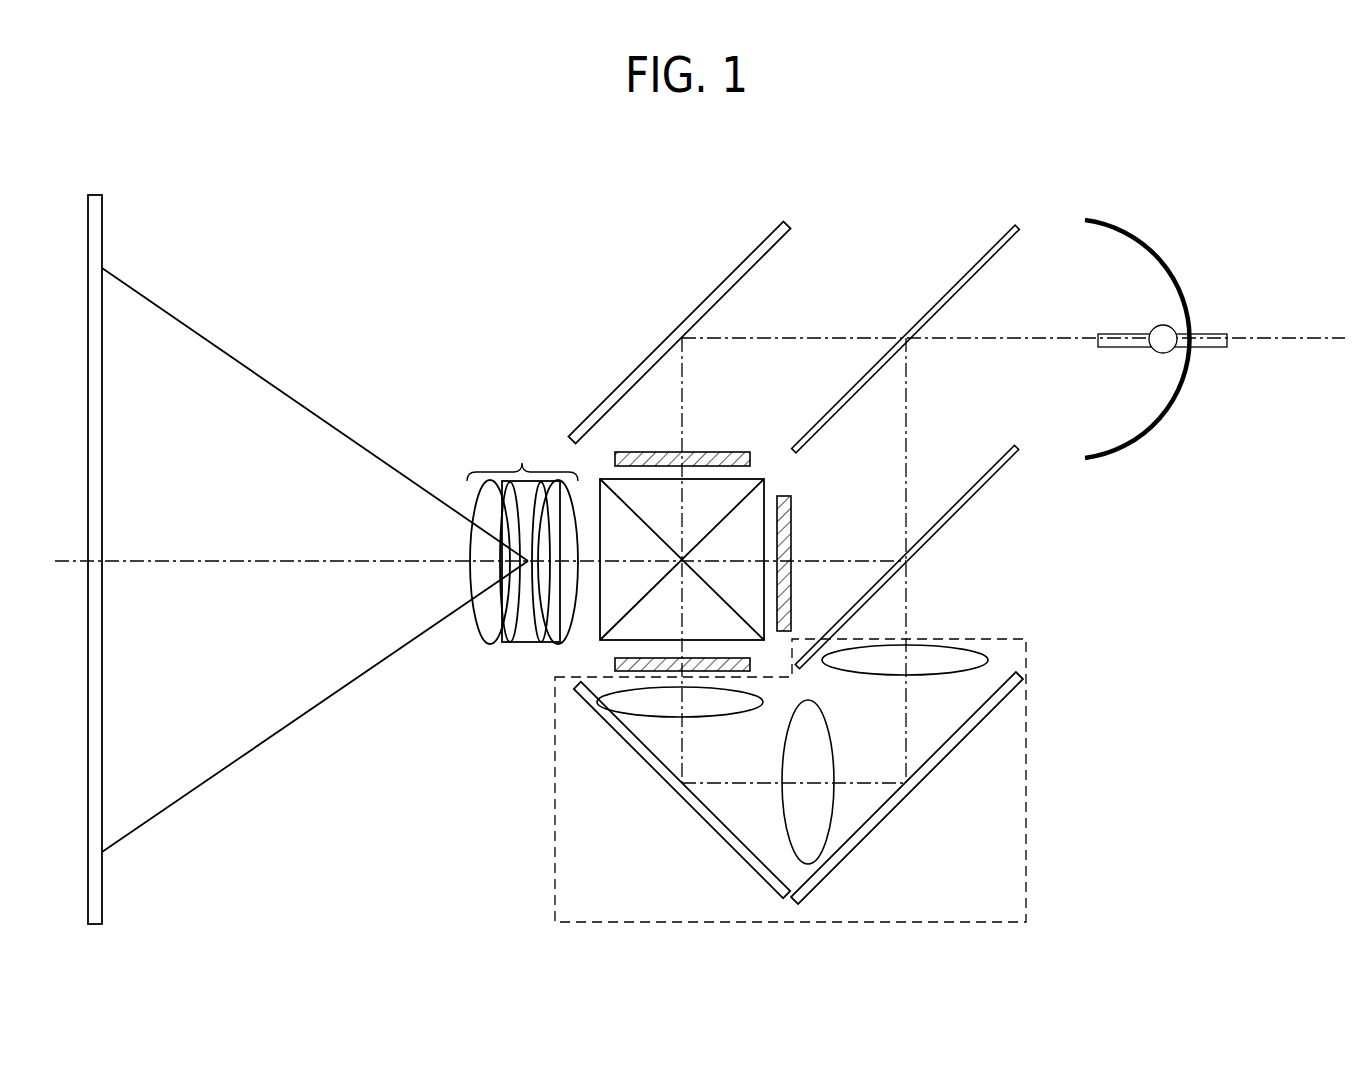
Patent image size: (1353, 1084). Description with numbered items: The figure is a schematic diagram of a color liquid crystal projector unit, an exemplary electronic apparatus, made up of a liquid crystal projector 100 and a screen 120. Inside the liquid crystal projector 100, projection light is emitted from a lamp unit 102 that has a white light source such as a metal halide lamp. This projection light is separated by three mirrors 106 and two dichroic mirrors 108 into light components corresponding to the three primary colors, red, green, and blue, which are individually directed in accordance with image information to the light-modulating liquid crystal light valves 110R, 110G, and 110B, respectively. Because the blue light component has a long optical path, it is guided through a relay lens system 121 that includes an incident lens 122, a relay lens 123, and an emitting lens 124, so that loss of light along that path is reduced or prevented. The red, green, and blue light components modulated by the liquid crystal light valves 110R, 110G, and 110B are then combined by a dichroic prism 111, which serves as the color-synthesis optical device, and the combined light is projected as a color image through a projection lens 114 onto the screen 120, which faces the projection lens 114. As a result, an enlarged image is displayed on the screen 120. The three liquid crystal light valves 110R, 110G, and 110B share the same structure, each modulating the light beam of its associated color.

The liquid crystal projector 100 is at (1097, 156).
The lamp unit 102 is at (1170, 395).
The mirrors 106 is at (727, 283).
The dichroic mirrors 108 is at (957, 290).
The liquid crystal light valve 110R is at (727, 452).
The liquid crystal light valve 110G is at (792, 550).
The liquid crystal light valve 110B is at (615, 661).
The dichroic prism 111 is at (619, 525).
The projection lens 114 is at (522, 458).
The screen 120 is at (102, 234).
The relay lens system 121 is at (1026, 875).
The incident lens 122 is at (953, 655).
The relay lens 123 is at (818, 822).
The emitting lens 124 is at (640, 707).